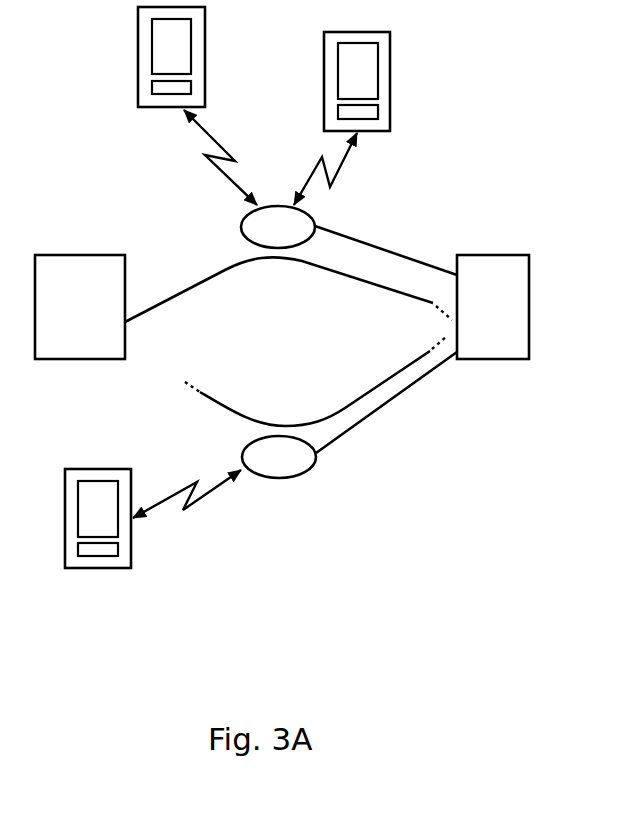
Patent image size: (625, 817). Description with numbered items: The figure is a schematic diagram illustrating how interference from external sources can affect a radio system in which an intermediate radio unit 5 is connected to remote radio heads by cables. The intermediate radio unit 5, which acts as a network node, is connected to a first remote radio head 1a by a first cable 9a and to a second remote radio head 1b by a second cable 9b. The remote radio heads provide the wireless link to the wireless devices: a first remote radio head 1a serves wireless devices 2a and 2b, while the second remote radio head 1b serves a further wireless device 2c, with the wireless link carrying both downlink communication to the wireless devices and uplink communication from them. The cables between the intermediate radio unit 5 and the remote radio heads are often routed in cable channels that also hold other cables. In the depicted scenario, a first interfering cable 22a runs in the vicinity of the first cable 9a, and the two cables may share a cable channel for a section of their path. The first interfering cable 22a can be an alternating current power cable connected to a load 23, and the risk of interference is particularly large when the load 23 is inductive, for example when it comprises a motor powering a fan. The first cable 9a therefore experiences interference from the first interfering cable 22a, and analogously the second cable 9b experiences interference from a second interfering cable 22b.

The wireless device 2a is at (138, 62).
The wireless device 2b is at (390, 78).
The wireless device 2c is at (90, 568).
The first remote radio head 1a is at (263, 240).
The second remote radio head 1b is at (264, 470).
The intermediate radio unit 5 is at (484, 319).
The load 23 is at (63, 307).
The first cable 9a is at (379, 247).
The second cable 9b is at (383, 403).
The first interfering cable 22a is at (309, 264).
The second interfering cable 22b is at (285, 423).